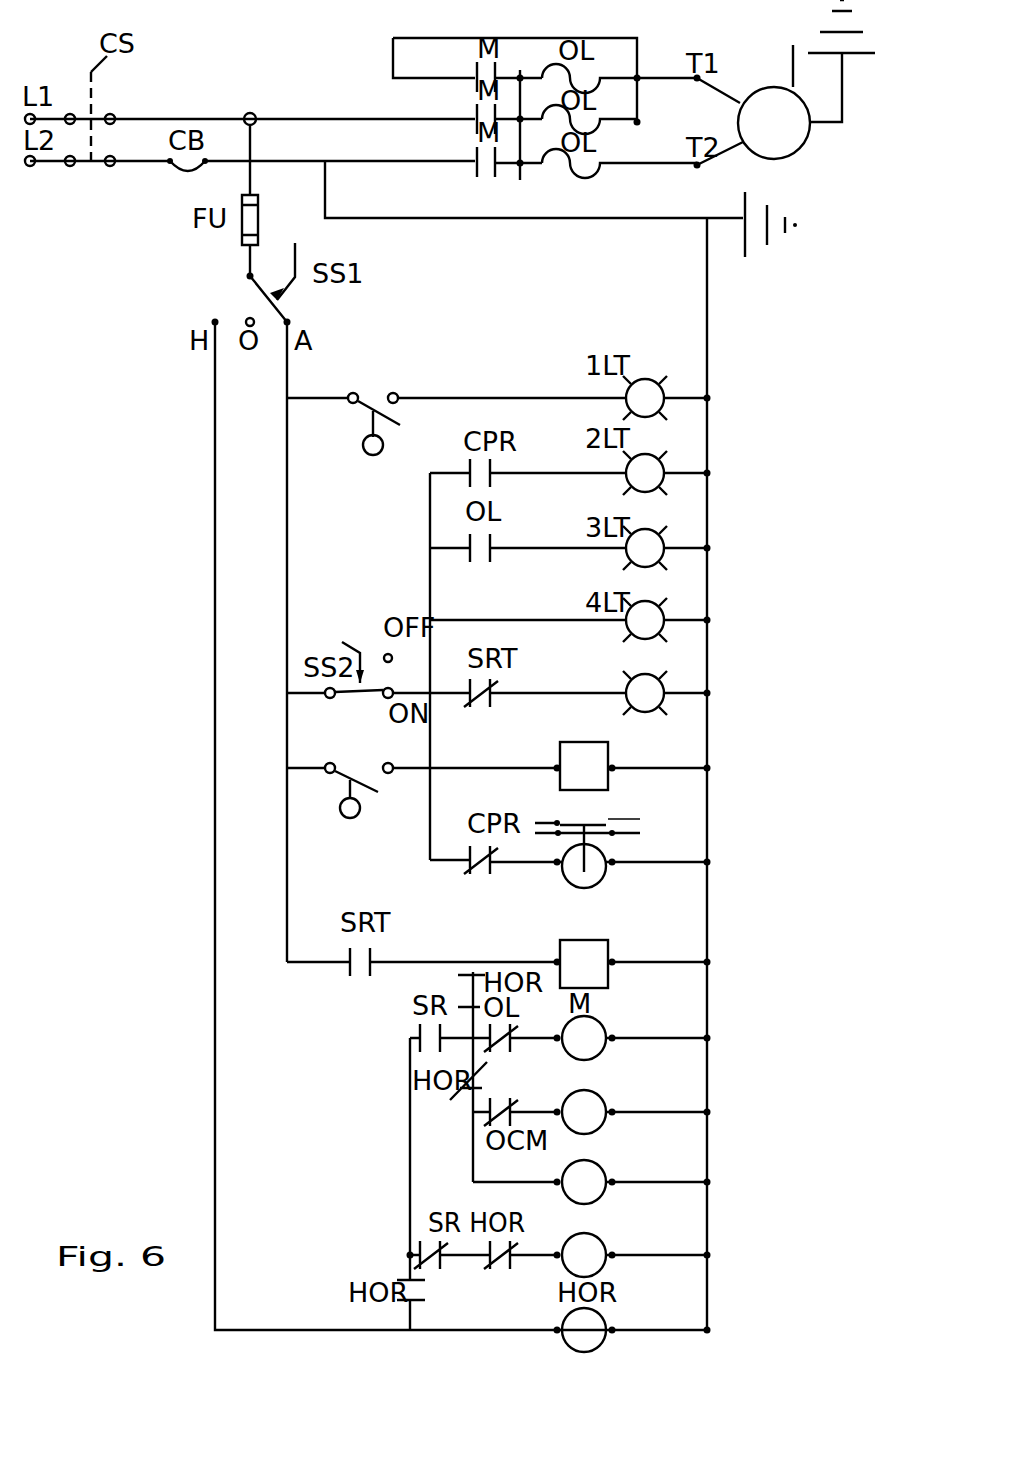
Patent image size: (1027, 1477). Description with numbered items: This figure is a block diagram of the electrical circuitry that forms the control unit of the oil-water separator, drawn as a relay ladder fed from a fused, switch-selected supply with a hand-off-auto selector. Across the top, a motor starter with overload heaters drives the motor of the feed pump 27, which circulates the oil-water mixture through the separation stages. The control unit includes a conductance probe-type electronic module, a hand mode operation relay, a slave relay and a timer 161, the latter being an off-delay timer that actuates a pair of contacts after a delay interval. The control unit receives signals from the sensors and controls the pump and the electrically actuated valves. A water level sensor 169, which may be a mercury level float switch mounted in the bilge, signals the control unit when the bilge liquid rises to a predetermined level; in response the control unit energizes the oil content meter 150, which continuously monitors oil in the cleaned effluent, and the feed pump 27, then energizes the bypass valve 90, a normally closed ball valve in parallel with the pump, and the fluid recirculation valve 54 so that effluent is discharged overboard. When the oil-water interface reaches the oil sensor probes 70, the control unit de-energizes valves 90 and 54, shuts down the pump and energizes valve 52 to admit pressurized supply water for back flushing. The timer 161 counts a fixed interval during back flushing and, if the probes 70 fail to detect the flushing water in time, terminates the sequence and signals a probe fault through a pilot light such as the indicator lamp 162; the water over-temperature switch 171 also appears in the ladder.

The feed pump 27 is at (793, 50).
The water overtemperature switch 171 is at (383, 435).
The indicator lamp 162 is at (660, 705).
The oil sensor probes 70 is at (610, 742).
The timer 161 is at (648, 787).
The oil content meter 150 is at (608, 940).
The fluid recirculation valve 54 is at (605, 1097).
The bypass valve 90 is at (603, 1168).
The valve 52 is at (610, 1233).
The water level sensor 169 is at (348, 797).